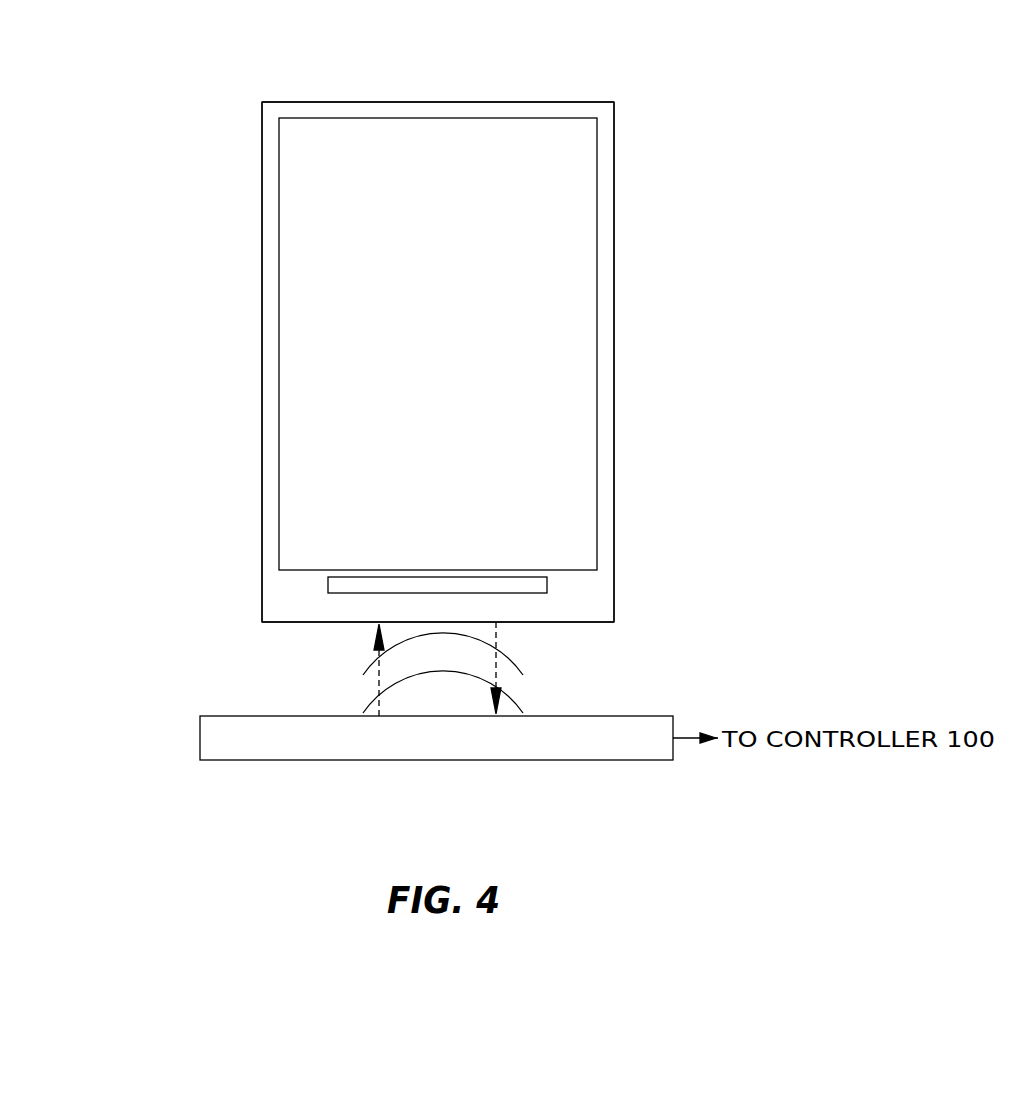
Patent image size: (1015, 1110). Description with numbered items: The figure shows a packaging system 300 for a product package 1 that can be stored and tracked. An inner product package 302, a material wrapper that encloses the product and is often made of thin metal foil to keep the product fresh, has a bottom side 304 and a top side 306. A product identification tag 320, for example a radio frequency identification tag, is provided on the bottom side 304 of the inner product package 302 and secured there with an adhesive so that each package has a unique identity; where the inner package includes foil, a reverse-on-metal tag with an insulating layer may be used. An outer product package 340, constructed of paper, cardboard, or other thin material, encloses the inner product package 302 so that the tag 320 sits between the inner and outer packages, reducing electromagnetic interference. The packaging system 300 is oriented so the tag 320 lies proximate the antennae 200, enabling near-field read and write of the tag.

The product package 1 is at (613, 102).
The antenna 200 is at (266, 762).
The packaging system 300 is at (495, 235).
The inner product package 302 is at (600, 350).
The bottom side 304 is at (262, 595).
The top side 306 is at (412, 118).
The product identification tag 320 is at (328, 585).
The outer product package 340 is at (262, 270).